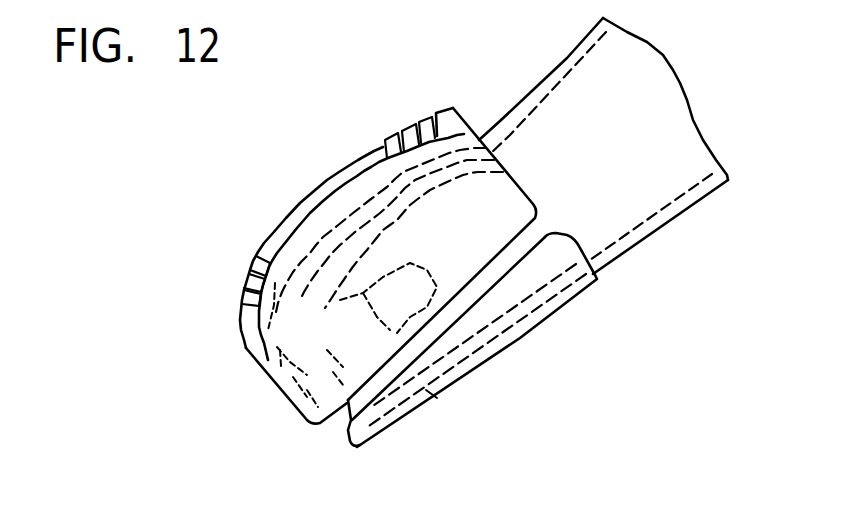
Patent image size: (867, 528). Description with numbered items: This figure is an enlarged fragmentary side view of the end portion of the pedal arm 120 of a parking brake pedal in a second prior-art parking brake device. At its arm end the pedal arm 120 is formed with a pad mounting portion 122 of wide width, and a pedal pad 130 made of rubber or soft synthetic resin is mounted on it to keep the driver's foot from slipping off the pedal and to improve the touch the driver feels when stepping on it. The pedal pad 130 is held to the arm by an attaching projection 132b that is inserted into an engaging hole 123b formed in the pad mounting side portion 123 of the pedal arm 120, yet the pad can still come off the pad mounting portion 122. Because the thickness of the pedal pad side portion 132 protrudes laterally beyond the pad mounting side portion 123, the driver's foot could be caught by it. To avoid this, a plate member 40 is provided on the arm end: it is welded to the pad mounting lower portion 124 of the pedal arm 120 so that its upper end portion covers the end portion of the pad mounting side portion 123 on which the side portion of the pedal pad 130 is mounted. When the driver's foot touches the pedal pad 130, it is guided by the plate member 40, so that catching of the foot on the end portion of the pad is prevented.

The pedal arm 120 is at (723, 184).
The pedal pad 130 is at (272, 231).
The pad mounting portion 122 is at (340, 223).
The pedal pad side portion 132 is at (291, 403).
The attaching projection 132b is at (244, 351).
The plate member 40 is at (518, 336).
The pad mounting side portion 123 is at (347, 418).
The pad mounting lower portion 124 is at (484, 372).
The engaging hole 123b is at (432, 396).